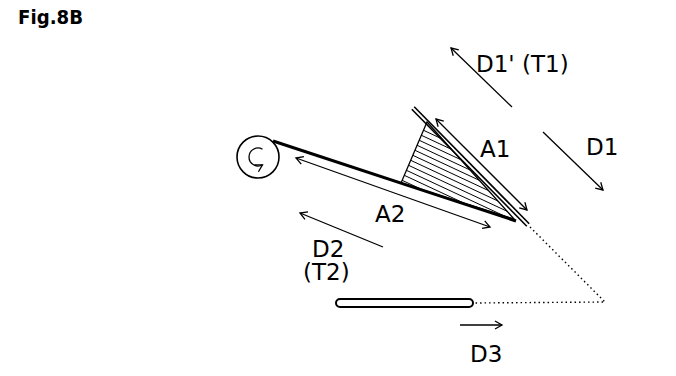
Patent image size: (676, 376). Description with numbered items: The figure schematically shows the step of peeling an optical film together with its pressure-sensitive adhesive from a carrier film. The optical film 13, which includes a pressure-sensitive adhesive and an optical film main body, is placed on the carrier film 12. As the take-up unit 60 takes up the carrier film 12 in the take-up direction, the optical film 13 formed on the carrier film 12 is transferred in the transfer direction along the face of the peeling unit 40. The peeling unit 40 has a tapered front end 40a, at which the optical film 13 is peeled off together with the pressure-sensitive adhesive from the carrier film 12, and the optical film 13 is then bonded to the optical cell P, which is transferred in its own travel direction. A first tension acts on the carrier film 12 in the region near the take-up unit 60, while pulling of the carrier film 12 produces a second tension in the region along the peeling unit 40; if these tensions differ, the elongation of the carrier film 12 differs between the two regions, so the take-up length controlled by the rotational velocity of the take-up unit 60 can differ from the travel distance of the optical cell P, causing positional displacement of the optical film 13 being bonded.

The take-up unit 60 is at (241, 145).
The carrier film 12 is at (322, 157).
The optical film 13 is at (416, 110).
The peeling unit 40 is at (412, 180).
The tapered front end 40a is at (512, 224).
The optical cell P is at (375, 308).